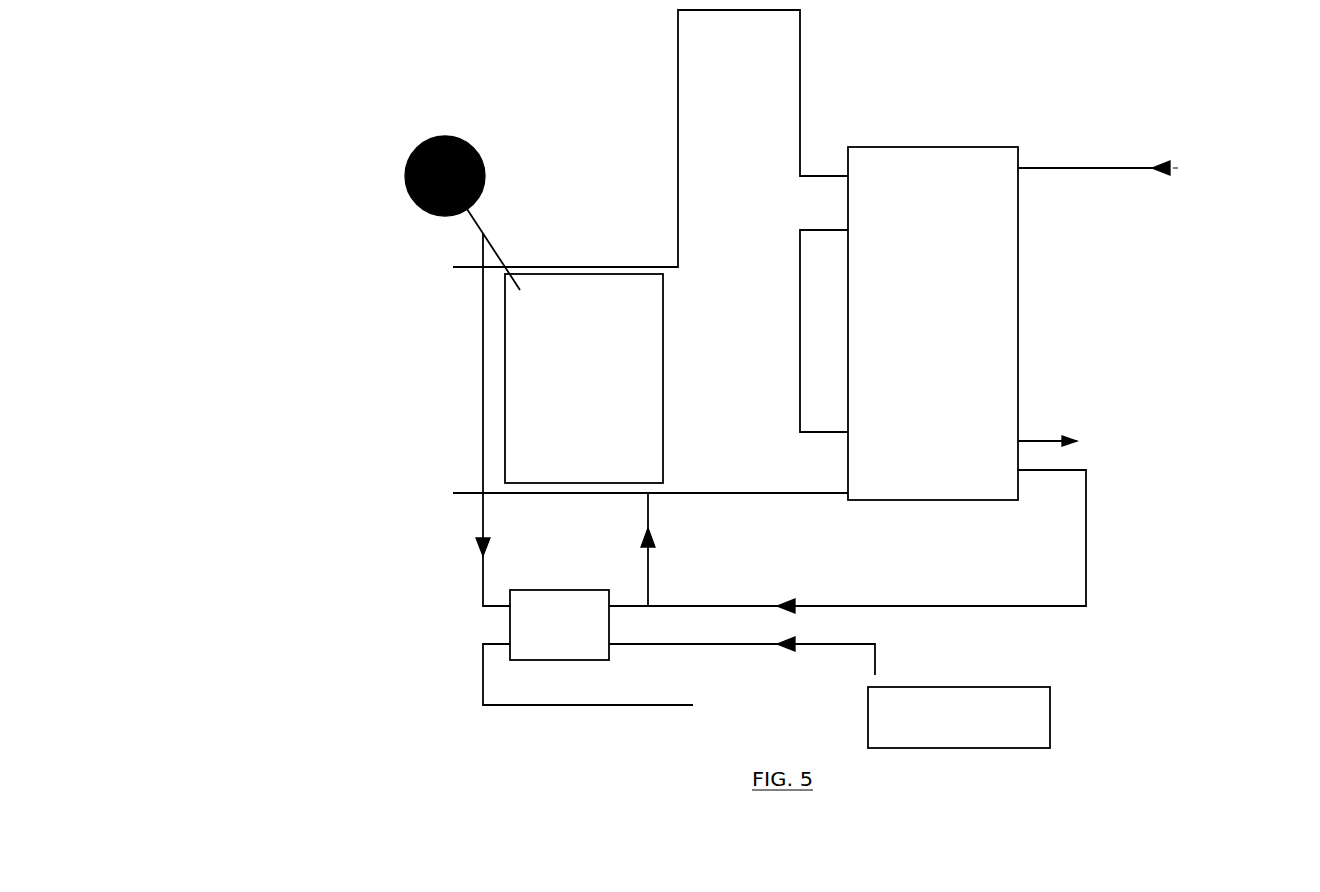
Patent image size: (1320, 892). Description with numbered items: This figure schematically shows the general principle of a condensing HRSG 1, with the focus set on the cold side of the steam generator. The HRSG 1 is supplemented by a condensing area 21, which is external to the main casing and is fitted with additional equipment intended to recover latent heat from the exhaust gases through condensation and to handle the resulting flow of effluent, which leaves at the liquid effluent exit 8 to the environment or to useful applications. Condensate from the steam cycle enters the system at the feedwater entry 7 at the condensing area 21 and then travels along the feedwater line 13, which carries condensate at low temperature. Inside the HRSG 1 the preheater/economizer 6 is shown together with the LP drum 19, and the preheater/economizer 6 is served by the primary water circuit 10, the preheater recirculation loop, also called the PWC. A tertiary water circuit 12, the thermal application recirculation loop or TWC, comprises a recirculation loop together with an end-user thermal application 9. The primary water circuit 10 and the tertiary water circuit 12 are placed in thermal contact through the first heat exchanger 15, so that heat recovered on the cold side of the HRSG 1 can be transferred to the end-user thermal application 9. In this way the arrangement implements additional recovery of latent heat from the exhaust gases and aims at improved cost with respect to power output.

The HRSG 1 is at (677, 80).
The preheater/economizer 6 is at (585, 372).
The feedwater entry 7 is at (1093, 167).
The liquid effluent exit 8 is at (1038, 437).
The end-user thermal application 9 is at (868, 713).
The primary water circuit 10 is at (480, 410).
The tertiary water circuit 12 is at (482, 674).
The feedwater line 13 is at (988, 610).
The first heat exchanger 15 is at (428, 517).
The LP drum 19 is at (437, 135).
The condensing area 21 is at (946, 335).